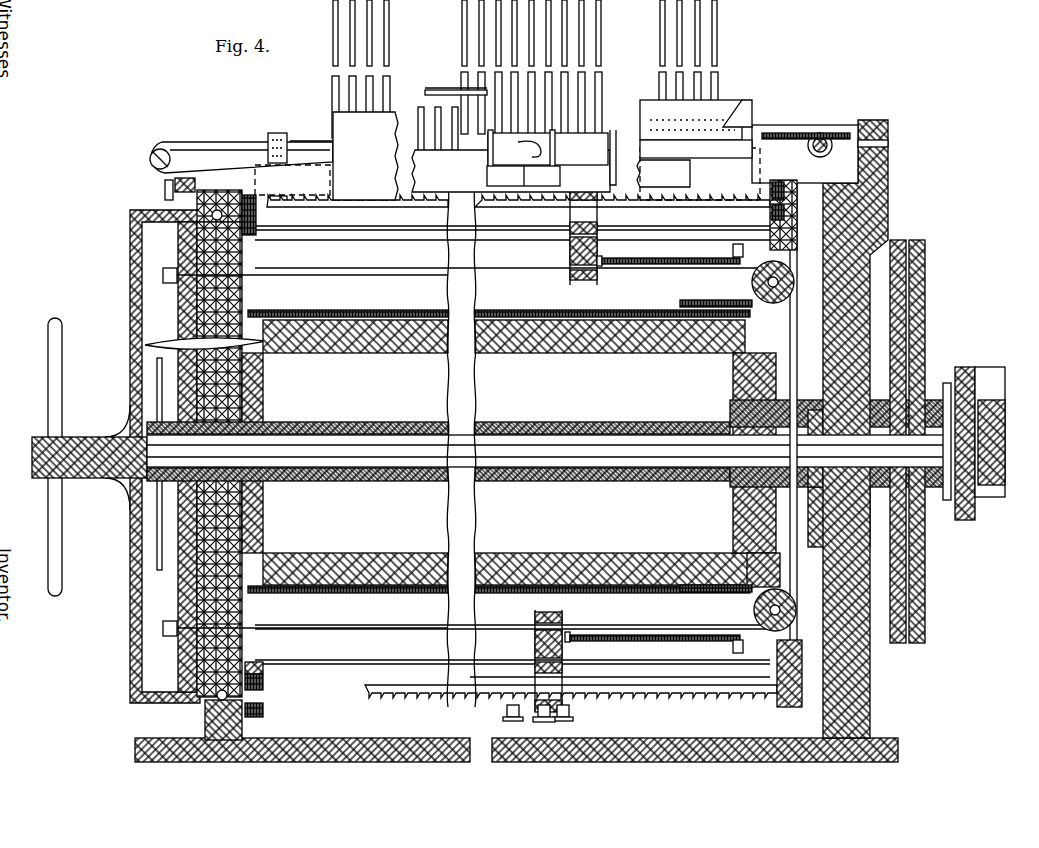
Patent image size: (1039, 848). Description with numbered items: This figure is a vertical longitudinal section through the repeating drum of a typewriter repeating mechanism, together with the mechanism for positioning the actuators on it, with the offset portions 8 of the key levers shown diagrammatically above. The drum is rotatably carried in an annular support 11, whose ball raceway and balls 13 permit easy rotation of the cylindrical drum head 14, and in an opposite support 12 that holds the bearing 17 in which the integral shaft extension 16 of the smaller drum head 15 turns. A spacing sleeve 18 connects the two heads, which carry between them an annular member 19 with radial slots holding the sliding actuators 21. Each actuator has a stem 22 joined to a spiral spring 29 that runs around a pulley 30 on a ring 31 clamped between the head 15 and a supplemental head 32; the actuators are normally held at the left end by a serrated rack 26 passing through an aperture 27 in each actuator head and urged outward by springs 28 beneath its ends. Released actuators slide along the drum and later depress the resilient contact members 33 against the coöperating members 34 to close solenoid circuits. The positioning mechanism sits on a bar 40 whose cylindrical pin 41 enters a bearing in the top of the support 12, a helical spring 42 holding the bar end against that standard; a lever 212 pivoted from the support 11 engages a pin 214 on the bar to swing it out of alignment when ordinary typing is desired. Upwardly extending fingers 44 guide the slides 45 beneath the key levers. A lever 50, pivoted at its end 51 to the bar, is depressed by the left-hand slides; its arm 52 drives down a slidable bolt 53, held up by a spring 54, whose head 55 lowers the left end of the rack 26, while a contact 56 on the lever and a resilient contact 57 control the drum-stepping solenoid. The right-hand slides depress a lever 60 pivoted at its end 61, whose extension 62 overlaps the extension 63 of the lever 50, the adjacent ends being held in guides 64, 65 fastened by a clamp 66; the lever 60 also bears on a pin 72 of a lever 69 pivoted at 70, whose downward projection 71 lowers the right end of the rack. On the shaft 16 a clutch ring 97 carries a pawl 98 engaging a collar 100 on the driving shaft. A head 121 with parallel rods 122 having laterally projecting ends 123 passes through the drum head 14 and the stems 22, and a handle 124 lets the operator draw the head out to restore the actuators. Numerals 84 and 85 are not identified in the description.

The offset portions of the key levers 8 is at (468, 40).
The support 11 is at (210, 718).
The support 12 is at (888, 192).
The balls 13 is at (198, 208).
The drum head 14 is at (256, 508).
The drum head 15 is at (733, 365).
The extension 16 is at (881, 472).
The bearing 17 is at (866, 414).
The spacing sleeve 18 is at (660, 472).
The annular member 19 is at (622, 340).
The actuators 21 is at (598, 230).
The stems 22 is at (570, 252).
The serrated rack 26 is at (480, 217).
The aperture 27 is at (570, 230).
The springs 28 is at (257, 220).
The spiral spring 29 is at (652, 308).
The pulley 30 is at (752, 279).
The ring 31 is at (762, 286).
The supplemental head 32 is at (790, 358).
The resilient members 33 is at (573, 722).
The coöperating members 34 is at (510, 710).
The bar 40 is at (157, 142).
The cylindrical pin 41 is at (890, 134).
The helical spring 42 is at (833, 128).
The fingers 44 is at (347, 117).
The slides 45 is at (347, 86).
The lever 50 is at (233, 147).
The end 51 is at (152, 153).
The arm 52 is at (277, 133).
The slidable bolt 53 is at (285, 178).
The spring 54 is at (293, 147).
The head 55 is at (293, 200).
The electric contact 56 is at (472, 108).
The resilient contact 57 is at (457, 92).
The lever 60 is at (730, 143).
The end 61 is at (820, 137).
The extension 62 is at (540, 160).
The extension 63 is at (522, 157).
The guide 64 is at (488, 158).
The guide 65 is at (553, 147).
The clamp 66 is at (527, 188).
The lever 69 is at (705, 175).
The pivot 70 is at (607, 157).
The downward projection 71 is at (748, 127).
The pin 72 is at (642, 167).
The ring 84 is at (926, 637).
The ring 85 is at (903, 640).
The ring 97 is at (960, 367).
The pawl 98 is at (1005, 372).
The collar 100 is at (1002, 484).
The head 121 is at (177, 303).
The rods 122 is at (483, 273).
The laterally projecting ends 123 is at (724, 245).
The handle 124 is at (63, 547).
The lever 212 is at (190, 178).
The pin 214 is at (163, 182).